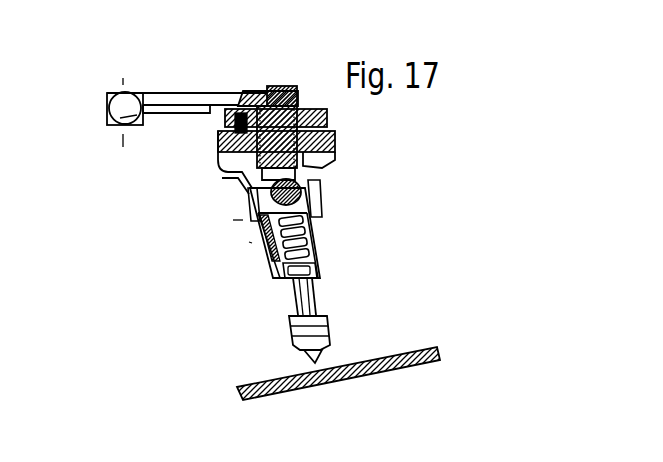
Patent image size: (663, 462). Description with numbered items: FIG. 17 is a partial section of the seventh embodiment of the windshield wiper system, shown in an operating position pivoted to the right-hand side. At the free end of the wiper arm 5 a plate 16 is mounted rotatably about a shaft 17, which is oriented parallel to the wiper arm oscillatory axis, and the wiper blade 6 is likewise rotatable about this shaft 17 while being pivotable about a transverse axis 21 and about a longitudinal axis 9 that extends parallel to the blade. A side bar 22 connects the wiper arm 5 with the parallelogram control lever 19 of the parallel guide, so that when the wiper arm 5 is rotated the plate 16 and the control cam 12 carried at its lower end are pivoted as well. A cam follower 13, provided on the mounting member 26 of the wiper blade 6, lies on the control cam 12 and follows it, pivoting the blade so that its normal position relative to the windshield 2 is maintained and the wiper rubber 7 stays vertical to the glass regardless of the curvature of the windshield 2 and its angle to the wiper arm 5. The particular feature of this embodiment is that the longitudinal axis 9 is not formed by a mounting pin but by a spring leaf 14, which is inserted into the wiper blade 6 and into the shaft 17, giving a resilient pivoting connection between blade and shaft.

The windshield 2 is at (418, 348).
The wiper arm 5 is at (330, 122).
The wiper blade assembly 6 is at (265, 262).
The wiper rubber 7 is at (290, 342).
The longitudinal axis 9 is at (262, 198).
The control cam 12 is at (222, 163).
The cam follower 13 is at (222, 178).
The spring leaf 14 is at (302, 182).
The plate 16 is at (210, 112).
The shaft 17 is at (278, 88).
The parallelogram control lever 19 is at (107, 122).
The transverse axis 21 is at (327, 202).
The side bar 22 is at (108, 93).
The mounting member 26 is at (327, 203).